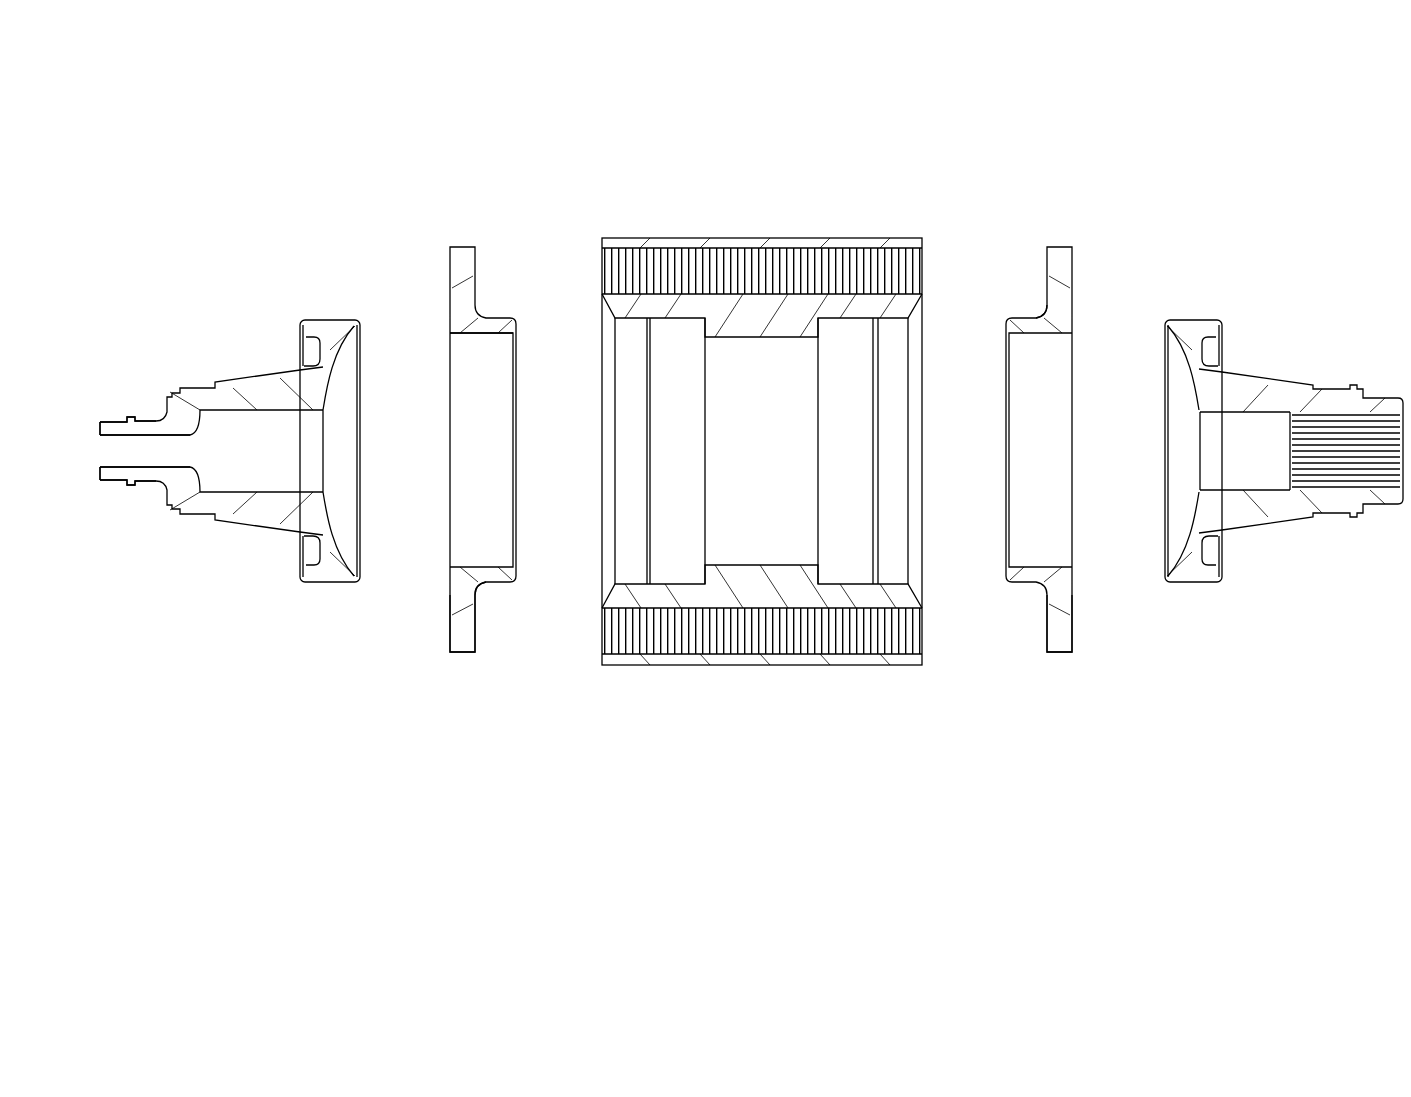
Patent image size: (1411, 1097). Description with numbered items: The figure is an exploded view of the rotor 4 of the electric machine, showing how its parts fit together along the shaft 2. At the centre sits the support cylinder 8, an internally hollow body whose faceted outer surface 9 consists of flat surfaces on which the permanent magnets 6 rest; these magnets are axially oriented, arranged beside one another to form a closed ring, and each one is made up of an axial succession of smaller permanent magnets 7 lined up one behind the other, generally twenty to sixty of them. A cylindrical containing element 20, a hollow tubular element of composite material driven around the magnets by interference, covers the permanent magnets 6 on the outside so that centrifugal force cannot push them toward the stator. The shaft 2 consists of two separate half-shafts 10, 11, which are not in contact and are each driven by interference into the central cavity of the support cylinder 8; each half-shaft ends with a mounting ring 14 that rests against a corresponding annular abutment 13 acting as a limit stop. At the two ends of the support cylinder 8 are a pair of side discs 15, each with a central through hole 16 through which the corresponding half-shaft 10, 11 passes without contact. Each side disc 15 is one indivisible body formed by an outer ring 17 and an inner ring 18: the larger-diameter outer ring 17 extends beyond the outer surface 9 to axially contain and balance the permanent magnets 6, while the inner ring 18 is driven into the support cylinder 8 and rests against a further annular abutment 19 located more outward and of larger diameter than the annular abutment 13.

The shaft 2 is at (180, 300).
The rotor 4 is at (290, 110).
The permanent magnets 6 is at (722, 215).
The permanent magnets 7 is at (661, 265).
The support cylinder 8 is at (703, 304).
The outer surface 9 is at (870, 610).
The half-shaft 10 is at (1258, 505).
The half-shaft 11 is at (177, 483).
The annular abutment 13 is at (824, 568).
The mounting ring 14 is at (332, 333).
The side disc 15 is at (466, 220).
The through hole 16 is at (478, 334).
The outer ring 17 is at (457, 628).
The inner ring 18 is at (497, 598).
The annular abutment 19 is at (882, 320).
The containing element 20 is at (822, 243).